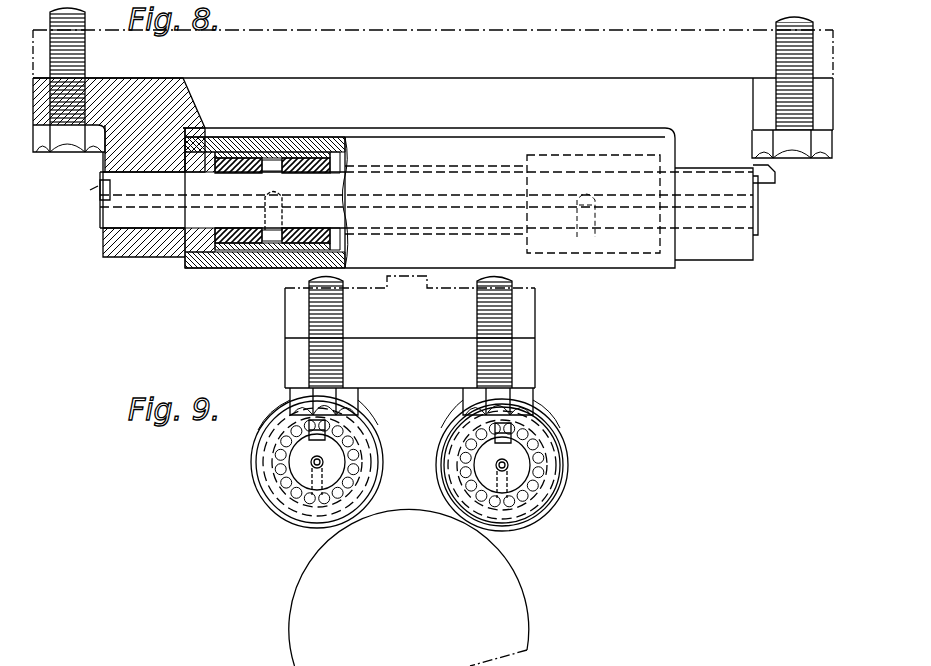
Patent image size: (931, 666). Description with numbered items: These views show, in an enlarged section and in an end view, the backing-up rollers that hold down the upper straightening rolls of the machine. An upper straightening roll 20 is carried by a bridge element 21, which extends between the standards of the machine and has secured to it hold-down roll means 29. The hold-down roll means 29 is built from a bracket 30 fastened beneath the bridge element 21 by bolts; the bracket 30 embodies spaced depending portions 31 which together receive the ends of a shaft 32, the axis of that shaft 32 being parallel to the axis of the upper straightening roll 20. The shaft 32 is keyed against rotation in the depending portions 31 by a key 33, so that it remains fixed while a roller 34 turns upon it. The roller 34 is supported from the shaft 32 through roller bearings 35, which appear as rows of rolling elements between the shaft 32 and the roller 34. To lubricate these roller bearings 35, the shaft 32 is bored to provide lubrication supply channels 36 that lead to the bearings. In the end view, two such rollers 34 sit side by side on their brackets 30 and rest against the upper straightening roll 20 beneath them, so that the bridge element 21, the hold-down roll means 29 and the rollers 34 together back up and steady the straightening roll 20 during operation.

In FIG. 9, the upper straightening roll 20 is at (409, 587).
In FIG. 8, the bridge element 21 is at (395, 52).
In FIG. 9, the bridge element 21 is at (518, 323).
In FIG. 8, the hold-down roll means 29 is at (529, 94).
In FIG. 9, the hold-down roll means 29 is at (546, 366).
In FIG. 8, the bracket 30 is at (304, 110).
In FIG. 9, the bracket 30 is at (520, 380).
In FIG. 8, the depending portion 31 is at (120, 150).
In FIG. 9, the depending portion 31 is at (556, 478).
In FIG. 8, the shaft 32 is at (103, 226).
In FIG. 9, the shaft 32 is at (297, 468).
In FIG. 8, the key 33 is at (118, 181).
In FIG. 9, the key 33 is at (307, 429).
In FIG. 8, the roller 34 is at (252, 269).
In FIG. 9, the roller 34 is at (284, 522).
In FIG. 8, the roller bearing 35 is at (213, 263).
In FIG. 9, the roller bearing 35 is at (352, 458).
In FIG. 8, the lubrication supply channel 36 is at (258, 205).
In FIG. 9, the lubrication supply channel 36 is at (322, 460).